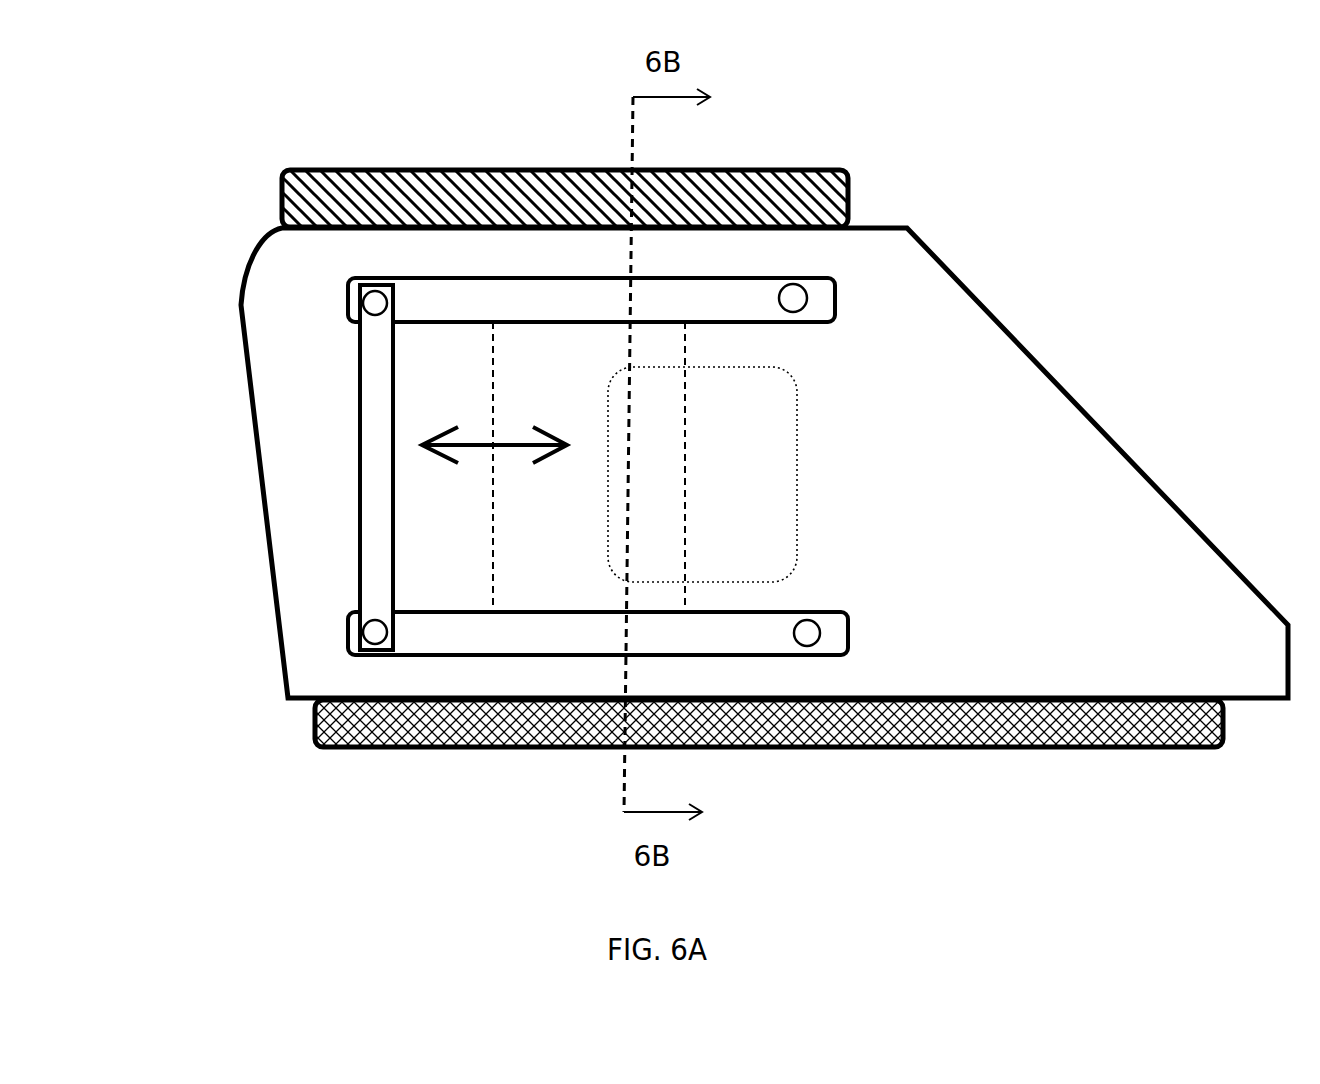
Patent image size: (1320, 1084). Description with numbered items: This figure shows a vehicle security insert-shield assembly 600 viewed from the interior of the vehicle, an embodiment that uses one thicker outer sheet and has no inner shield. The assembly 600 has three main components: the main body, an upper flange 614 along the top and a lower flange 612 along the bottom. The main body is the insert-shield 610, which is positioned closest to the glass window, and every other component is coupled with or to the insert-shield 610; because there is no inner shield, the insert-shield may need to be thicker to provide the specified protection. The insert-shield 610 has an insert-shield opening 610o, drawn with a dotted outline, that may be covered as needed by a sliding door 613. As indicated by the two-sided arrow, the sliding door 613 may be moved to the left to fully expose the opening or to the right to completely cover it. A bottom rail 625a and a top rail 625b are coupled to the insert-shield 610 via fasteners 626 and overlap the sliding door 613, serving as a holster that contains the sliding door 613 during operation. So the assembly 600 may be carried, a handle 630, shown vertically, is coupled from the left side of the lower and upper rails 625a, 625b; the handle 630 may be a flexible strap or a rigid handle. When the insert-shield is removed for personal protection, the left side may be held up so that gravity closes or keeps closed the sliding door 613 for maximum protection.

The insert-shield assembly 600 is at (1174, 152).
The insert-shield 610 is at (977, 448).
The insert-shield opening 610o is at (772, 380).
The lower flange 612 is at (1182, 747).
The sliding door 613 is at (520, 492).
The upper flange 614 is at (845, 167).
The bottom rail 625a is at (837, 653).
The top rail 625b is at (820, 297).
The fasteners 626 is at (375, 302).
The handle 630 is at (358, 383).